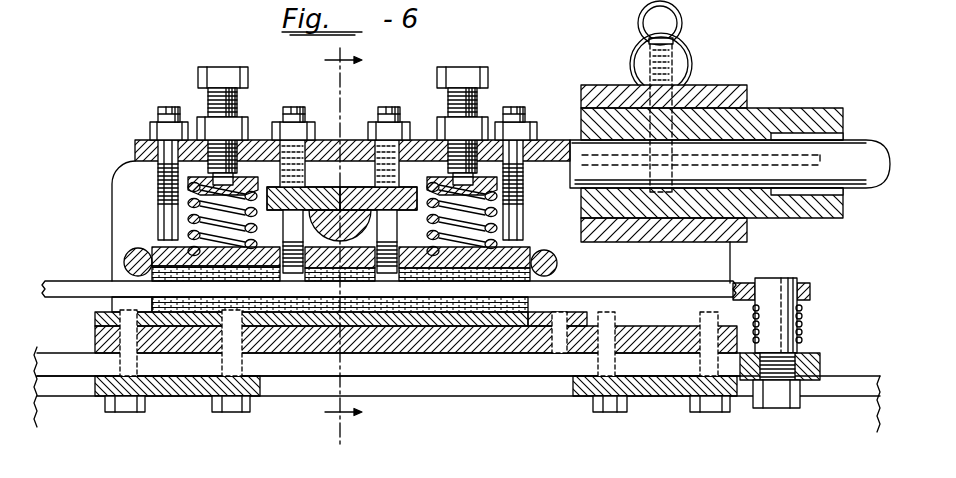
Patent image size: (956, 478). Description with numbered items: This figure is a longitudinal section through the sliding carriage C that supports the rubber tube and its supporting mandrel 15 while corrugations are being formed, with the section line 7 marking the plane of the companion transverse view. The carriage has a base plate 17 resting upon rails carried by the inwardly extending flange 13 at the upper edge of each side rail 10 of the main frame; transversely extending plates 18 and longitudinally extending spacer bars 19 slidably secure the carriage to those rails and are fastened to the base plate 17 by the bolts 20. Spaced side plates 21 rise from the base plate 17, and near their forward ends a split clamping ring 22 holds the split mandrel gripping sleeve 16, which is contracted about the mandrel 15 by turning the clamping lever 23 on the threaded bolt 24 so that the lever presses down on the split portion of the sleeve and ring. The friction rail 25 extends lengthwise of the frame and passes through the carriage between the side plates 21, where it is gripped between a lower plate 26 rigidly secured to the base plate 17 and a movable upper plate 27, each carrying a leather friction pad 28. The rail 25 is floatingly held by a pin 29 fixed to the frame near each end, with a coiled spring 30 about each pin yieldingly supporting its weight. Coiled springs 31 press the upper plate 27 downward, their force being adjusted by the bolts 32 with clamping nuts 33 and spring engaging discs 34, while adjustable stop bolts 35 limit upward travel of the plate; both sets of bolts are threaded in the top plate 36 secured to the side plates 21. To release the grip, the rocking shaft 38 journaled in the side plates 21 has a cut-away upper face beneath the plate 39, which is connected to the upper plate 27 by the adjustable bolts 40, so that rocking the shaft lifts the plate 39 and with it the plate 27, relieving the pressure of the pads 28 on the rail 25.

The side rails 10 is at (870, 429).
The inwardly extending flange 13 is at (473, 390).
The supporting mandrel 15 is at (865, 150).
The mandrel gripping sleeve 16 is at (808, 113).
The base plate 17 is at (667, 339).
The transversely extending plates 18 is at (663, 392).
The longitudinally extending spacer bars 19 is at (530, 374).
The bolts 20 is at (703, 410).
The side plates 21 is at (112, 224).
The split clamping ring 22 is at (620, 80).
The clamping lever 23 is at (675, 30).
The bolt 24 is at (686, 70).
The friction rail 25 is at (62, 288).
The lower plate 26 is at (440, 326).
The upper plate 27 is at (275, 245).
The leather friction pad 28 is at (322, 312).
The pin 29 is at (784, 286).
The coiled spring 30 is at (806, 326).
The coiled springs 31 is at (188, 208).
The bolts 32 is at (200, 73).
The clamping nuts 33 is at (248, 128).
The spring engaging discs 34 is at (188, 182).
The adjustable stop bolts 35 is at (157, 114).
The top plate 36 is at (140, 152).
The rocking shaft 38 is at (372, 216).
The plate 39 is at (342, 184).
The adjustable bolts 40 is at (305, 104).
The section line 7- 7 is at (332, 247).
The sliding carriage C is at (465, 63).